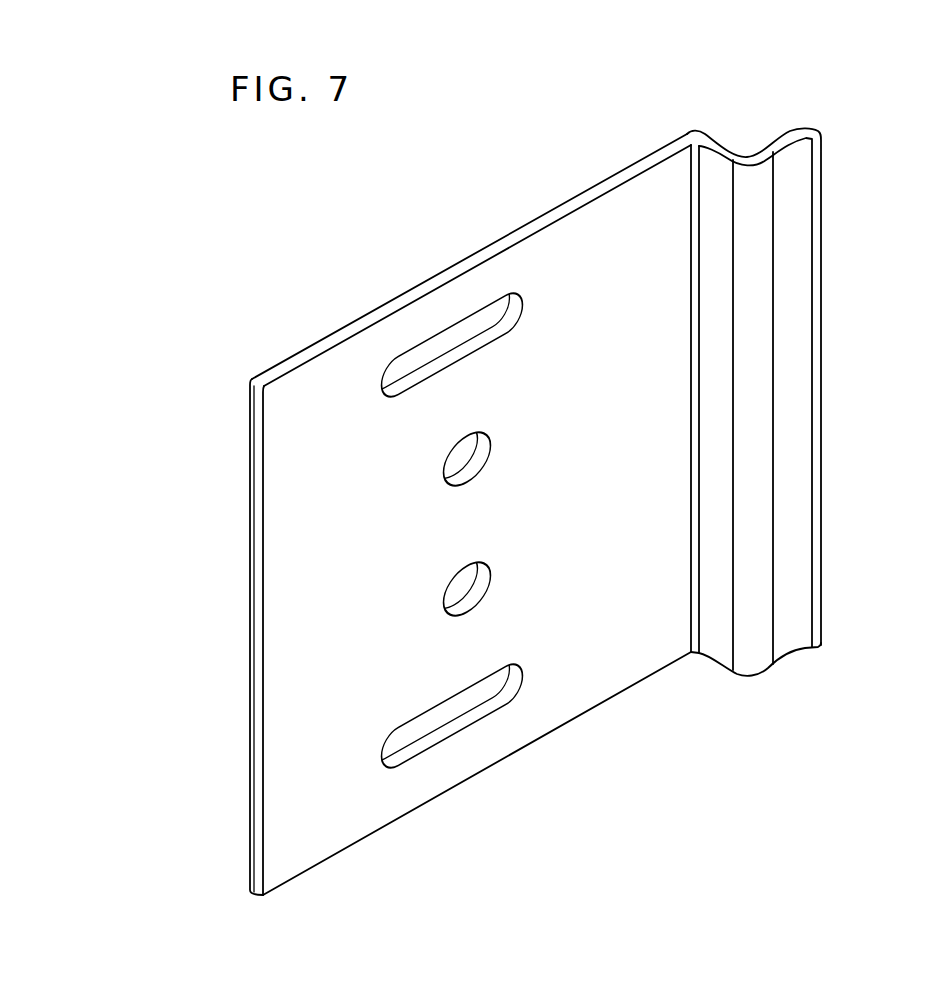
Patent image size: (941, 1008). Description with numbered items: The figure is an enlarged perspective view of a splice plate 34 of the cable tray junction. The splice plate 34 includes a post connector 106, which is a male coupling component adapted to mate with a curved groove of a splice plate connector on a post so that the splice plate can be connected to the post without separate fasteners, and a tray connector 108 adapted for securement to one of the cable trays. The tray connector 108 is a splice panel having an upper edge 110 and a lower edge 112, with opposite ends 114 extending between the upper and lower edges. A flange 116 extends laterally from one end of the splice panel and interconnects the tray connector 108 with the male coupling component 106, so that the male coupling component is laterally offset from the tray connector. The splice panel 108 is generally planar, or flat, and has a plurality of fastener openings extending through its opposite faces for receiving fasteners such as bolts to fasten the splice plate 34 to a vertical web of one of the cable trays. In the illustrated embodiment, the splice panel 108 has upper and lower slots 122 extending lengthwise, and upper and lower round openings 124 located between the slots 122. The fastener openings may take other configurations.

The splice plate 34 is at (197, 236).
The post connector 106 is at (780, 133).
The tray connector 108 is at (308, 573).
The upper edge 110 is at (528, 228).
The lower edge 112 is at (472, 776).
The opposite ends 114 is at (257, 498).
The flange 116 is at (720, 142).
The slots 122 is at (482, 346).
The round openings 124 is at (470, 473).